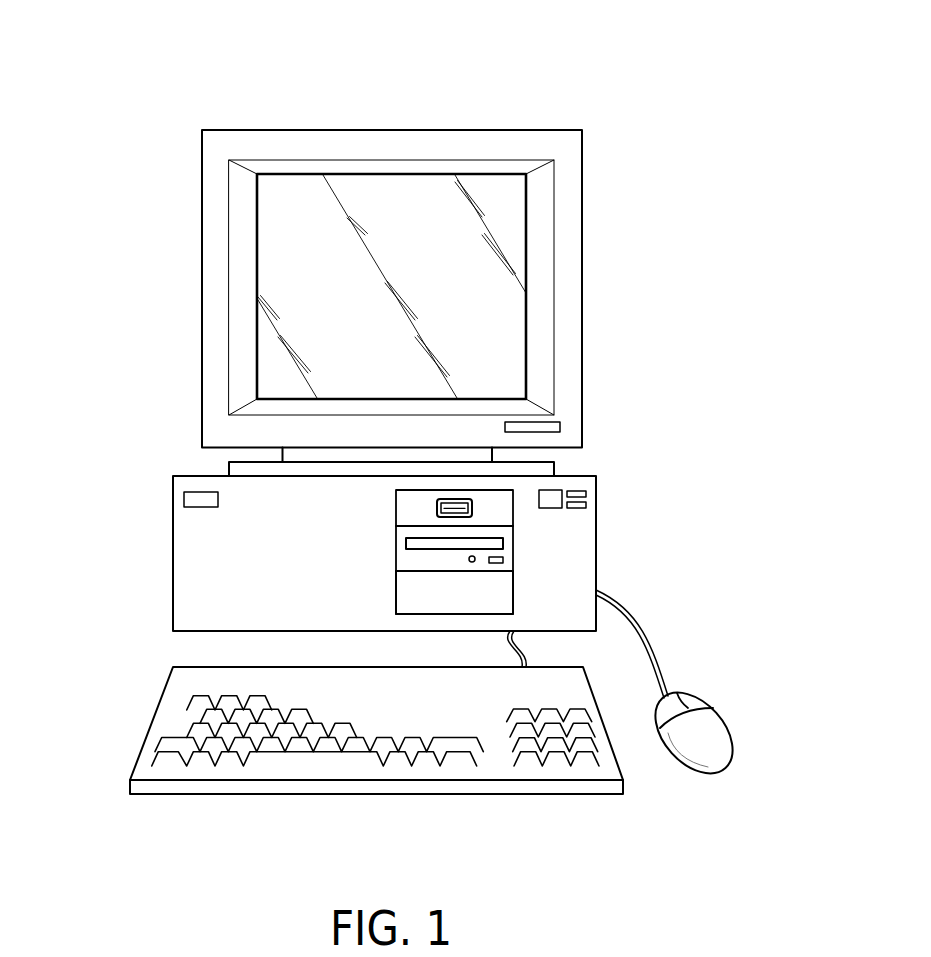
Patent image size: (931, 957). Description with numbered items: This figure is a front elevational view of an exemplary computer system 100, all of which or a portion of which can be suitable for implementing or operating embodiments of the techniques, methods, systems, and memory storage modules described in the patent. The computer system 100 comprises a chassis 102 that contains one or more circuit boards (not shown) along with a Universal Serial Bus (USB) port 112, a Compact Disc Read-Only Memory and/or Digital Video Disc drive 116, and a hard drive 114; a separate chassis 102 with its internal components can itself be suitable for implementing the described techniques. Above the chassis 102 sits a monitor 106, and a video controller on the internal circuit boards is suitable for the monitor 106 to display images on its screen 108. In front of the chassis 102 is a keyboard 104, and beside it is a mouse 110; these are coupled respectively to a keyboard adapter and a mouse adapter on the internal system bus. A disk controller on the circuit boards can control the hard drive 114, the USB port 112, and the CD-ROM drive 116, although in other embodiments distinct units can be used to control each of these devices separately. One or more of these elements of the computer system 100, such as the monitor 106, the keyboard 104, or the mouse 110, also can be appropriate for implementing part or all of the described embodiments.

The computer system 100 is at (573, 106).
The chassis 102 is at (172, 555).
The keyboard 104 is at (155, 717).
The monitor 106 is at (277, 130).
The screen 108 is at (307, 293).
The mouse 110 is at (713, 725).
The Universal Serial Bus (USB) port 112 is at (477, 503).
The hard drive 114 is at (503, 592).
The Compact Disc Read-Only Memory (CD-ROM) and/or Digital Video Disc (DVD) drive 116 is at (510, 550).